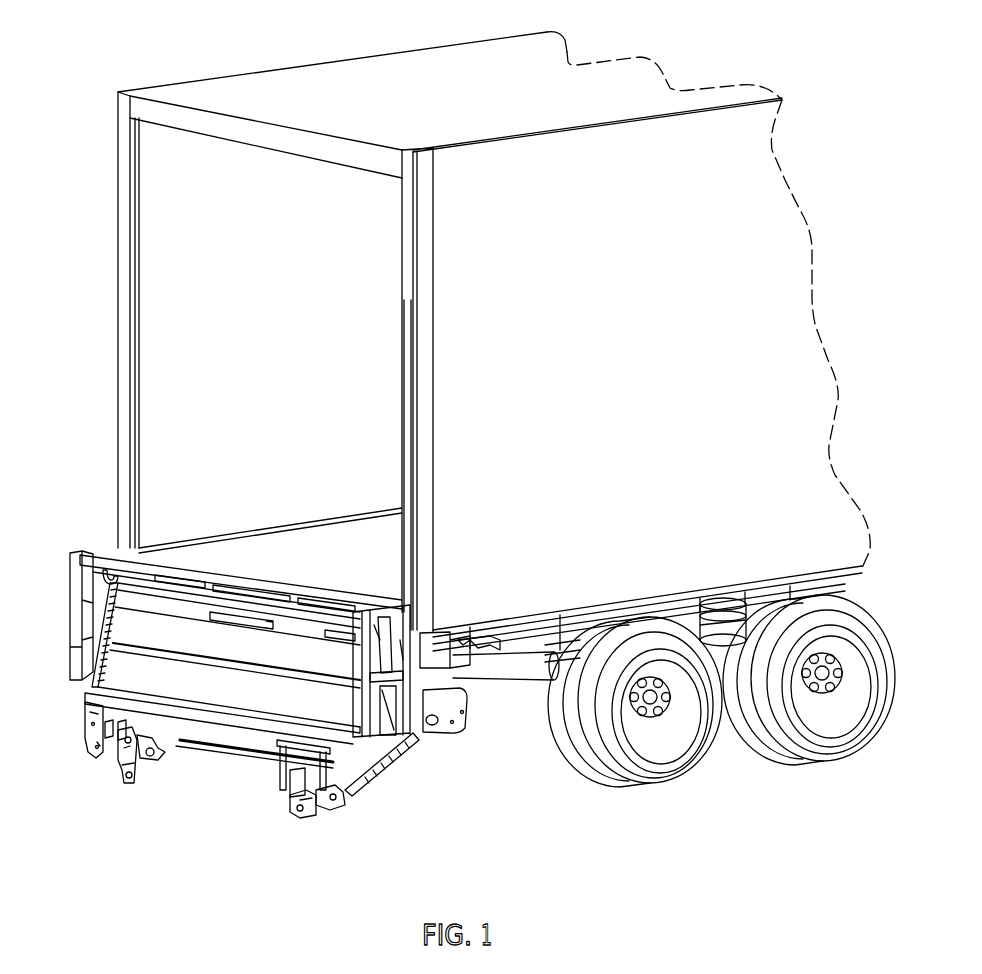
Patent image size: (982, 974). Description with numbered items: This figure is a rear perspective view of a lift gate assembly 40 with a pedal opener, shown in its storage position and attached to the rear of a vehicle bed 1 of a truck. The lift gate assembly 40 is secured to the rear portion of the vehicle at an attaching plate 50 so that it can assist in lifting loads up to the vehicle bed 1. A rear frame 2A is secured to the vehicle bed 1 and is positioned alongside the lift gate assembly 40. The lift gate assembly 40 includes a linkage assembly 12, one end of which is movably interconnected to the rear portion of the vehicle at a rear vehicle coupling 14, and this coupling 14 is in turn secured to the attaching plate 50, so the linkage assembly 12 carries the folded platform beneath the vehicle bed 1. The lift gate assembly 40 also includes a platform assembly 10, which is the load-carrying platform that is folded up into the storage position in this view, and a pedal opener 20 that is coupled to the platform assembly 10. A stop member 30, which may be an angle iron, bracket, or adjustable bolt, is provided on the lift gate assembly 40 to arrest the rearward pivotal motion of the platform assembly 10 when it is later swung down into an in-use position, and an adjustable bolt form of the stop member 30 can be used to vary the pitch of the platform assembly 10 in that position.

The vehicle bed 1 is at (222, 545).
The rear frame 2A is at (418, 627).
The platform assembly 10 is at (108, 656).
The linkage assembly 12 is at (394, 776).
The rear vehicle coupling 14 is at (452, 719).
The pedal opener 20 is at (288, 790).
The stop member 30 is at (114, 741).
The lift gate assembly 40 is at (70, 746).
The attaching plate 50 is at (437, 668).